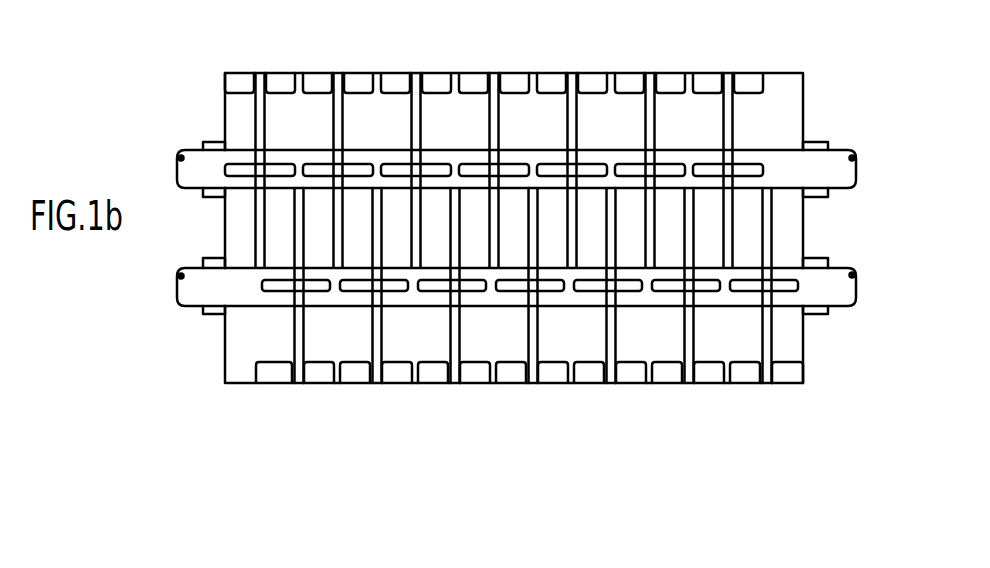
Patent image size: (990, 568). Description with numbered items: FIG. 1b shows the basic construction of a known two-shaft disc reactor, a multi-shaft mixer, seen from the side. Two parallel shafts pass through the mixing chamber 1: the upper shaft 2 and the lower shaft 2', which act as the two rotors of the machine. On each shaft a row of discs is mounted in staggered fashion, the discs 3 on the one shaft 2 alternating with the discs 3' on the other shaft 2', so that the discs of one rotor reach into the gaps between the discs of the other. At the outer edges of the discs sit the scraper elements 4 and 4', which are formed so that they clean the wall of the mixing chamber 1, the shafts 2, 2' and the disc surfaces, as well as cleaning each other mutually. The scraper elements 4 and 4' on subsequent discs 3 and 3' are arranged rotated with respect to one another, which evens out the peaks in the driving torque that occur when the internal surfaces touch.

The mixing chamber 1 is at (503, 65).
The shaft 2 is at (576, 94).
The shaft 2' is at (516, 376).
The disc 3 is at (547, 133).
The disc 3' is at (533, 336).
The scraper element 4 is at (494, 46).
The scraper element 4' is at (529, 423).